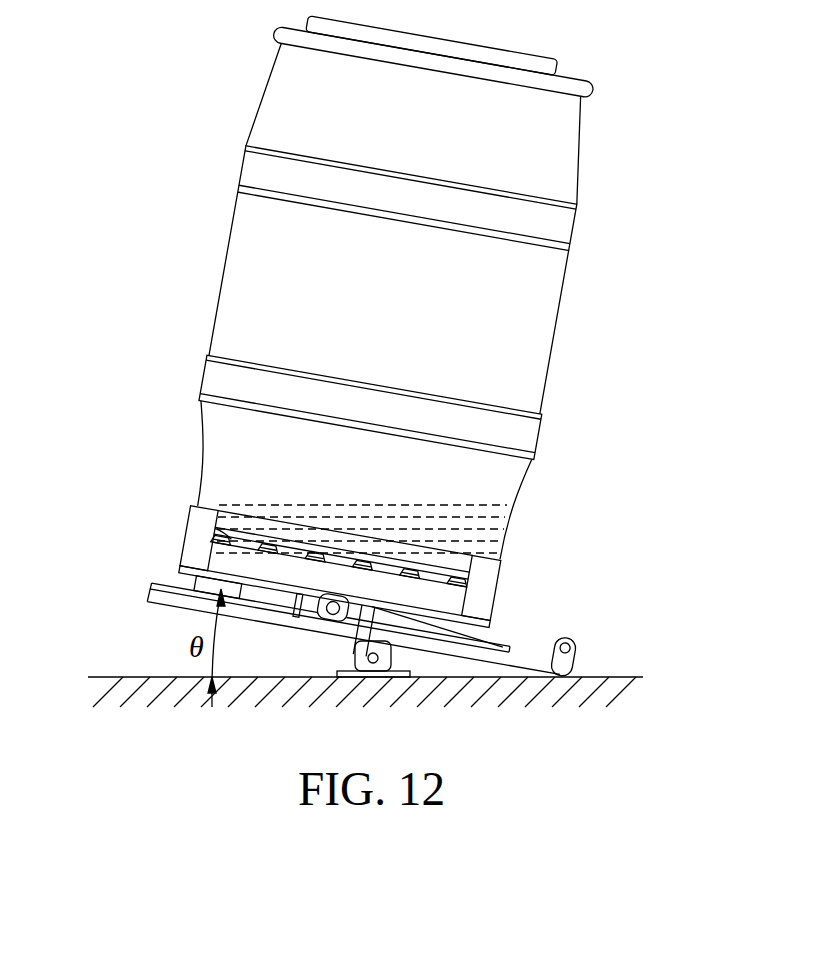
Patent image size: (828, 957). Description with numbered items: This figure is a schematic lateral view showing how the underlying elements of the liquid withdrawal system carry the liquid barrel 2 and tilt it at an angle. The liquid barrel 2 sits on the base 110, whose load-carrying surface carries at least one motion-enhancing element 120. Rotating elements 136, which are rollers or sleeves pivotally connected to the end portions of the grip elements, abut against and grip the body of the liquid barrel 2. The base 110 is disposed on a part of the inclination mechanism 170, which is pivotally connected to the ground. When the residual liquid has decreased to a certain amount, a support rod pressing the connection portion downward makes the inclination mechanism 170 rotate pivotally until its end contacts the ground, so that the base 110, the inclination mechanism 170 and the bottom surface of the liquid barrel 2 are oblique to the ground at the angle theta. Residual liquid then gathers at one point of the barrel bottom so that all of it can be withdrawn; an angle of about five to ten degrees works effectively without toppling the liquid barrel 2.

The liquid barrel 2 is at (265, 272).
The base 110 is at (247, 562).
The motion-enhancing element 120 is at (373, 557).
The rotating element 136 is at (488, 577).
The inclination mechanism 170 is at (150, 593).